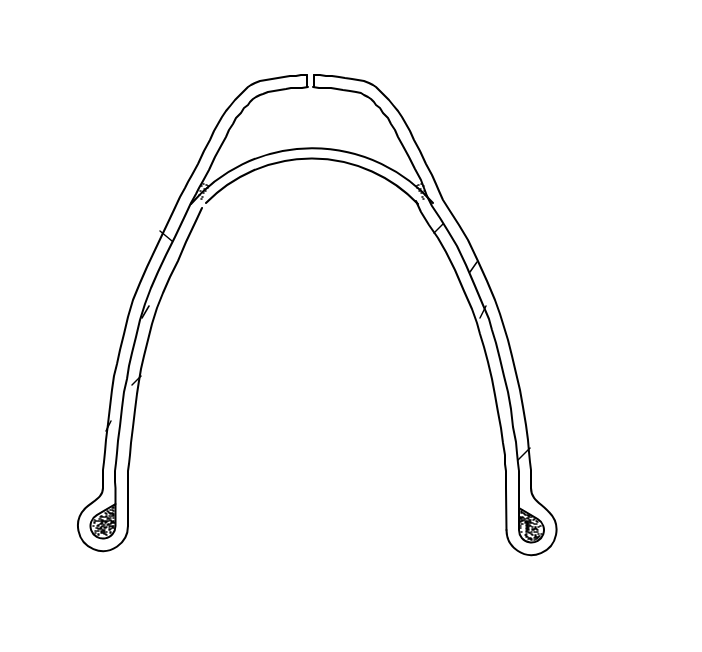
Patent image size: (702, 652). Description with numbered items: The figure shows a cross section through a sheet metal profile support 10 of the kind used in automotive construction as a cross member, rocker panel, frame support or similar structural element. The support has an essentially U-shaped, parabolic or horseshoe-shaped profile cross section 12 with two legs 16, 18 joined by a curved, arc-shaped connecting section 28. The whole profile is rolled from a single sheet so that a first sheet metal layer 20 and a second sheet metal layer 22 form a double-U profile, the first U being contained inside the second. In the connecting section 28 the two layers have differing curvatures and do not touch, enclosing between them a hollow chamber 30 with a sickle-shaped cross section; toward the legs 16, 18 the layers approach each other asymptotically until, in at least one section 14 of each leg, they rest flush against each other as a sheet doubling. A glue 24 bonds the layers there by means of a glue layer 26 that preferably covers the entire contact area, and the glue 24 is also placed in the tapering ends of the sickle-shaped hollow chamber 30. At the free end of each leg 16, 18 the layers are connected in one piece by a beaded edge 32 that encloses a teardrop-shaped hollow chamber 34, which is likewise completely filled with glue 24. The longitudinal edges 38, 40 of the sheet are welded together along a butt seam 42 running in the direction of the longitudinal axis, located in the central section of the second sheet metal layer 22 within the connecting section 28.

The sheet metal profile support 10 is at (542, 154).
The profile cross section 12 is at (115, 300).
The section 14 is at (165, 237).
The leg 16 is at (99, 386).
The leg 18 is at (516, 341).
The first sheet metal layer 20 is at (137, 380).
The second sheet metal layer 22 is at (108, 426).
The glue 24 is at (207, 195).
The glue layer 26 is at (146, 313).
The connecting section 28 is at (369, 68).
The hollow chamber 30 is at (351, 115).
The beaded edge 32 is at (70, 501).
The hollow chamber 34 is at (110, 527).
The longitudinal edge 38 is at (305, 78).
The longitudinal edge 40 is at (314, 78).
The butt seam 42 is at (312, 97).